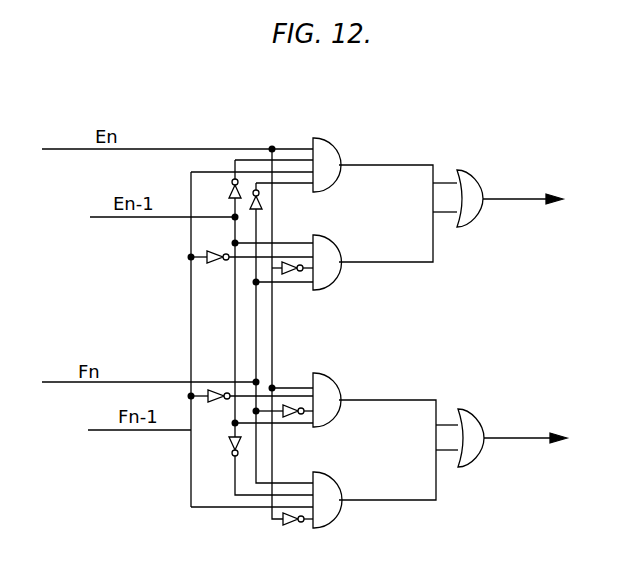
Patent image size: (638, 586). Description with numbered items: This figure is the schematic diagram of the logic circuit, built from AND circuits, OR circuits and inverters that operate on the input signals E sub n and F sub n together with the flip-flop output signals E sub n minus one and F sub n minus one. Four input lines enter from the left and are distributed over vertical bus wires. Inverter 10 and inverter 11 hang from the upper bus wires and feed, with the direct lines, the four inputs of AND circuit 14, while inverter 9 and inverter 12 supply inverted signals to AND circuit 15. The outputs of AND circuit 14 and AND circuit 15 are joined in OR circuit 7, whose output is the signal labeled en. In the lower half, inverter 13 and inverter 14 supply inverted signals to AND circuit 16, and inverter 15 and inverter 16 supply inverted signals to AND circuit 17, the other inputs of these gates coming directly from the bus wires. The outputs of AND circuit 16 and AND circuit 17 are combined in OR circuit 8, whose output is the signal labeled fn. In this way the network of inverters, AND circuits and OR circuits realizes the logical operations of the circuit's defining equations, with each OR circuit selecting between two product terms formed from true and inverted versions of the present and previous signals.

The OR circuit 7 is at (510, 187).
The OR circuit 8 is at (512, 426).
The inverter 9 is at (208, 263).
The inverter 10 is at (228, 196).
The inverter 11 is at (262, 204).
The inverter 12 is at (290, 274).
The inverter 13 is at (216, 388).
The AND circuit and inverter 14 is at (290, 417).
The AND circuit and inverter 15 is at (228, 441).
The AND circuit and inverter 16 is at (328, 464).
The AND circuit 17 is at (347, 499).